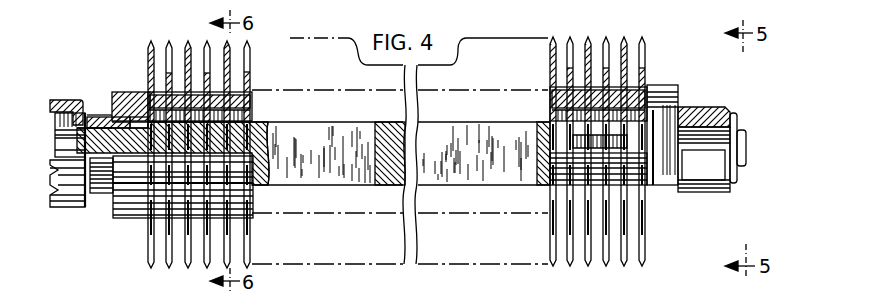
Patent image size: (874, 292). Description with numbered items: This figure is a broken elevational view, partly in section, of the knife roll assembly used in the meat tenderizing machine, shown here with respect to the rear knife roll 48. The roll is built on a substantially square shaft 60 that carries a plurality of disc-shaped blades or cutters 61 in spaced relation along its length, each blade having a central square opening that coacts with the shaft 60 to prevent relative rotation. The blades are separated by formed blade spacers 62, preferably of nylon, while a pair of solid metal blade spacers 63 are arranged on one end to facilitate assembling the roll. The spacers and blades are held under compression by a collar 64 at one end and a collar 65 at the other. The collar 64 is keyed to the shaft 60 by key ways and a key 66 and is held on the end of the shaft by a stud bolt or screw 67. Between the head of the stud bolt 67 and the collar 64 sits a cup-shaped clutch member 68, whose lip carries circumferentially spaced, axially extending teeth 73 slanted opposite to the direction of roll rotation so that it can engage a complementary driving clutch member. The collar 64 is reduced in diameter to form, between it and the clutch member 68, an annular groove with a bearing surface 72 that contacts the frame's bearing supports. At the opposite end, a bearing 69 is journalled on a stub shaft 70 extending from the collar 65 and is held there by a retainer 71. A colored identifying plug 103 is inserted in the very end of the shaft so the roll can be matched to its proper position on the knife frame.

The rear knife roll 48 is at (554, 39).
The shaft 60 is at (463, 173).
The disc-shaped blades 61 is at (230, 55).
The blade spacers 62 is at (190, 72).
The solid metal blade spacers 63 is at (632, 76).
The collar 64 is at (133, 92).
The collar 65 is at (662, 86).
The key 66 is at (108, 117).
The stud bolt 67 is at (62, 128).
The clutch member 68 is at (72, 102).
The bearing 69 is at (704, 107).
The stub shaft 70 is at (712, 123).
The retainer 71 is at (733, 125).
The bearing surface 72 is at (99, 190).
The teeth 73 is at (68, 172).
The identifying plug 103 is at (746, 146).